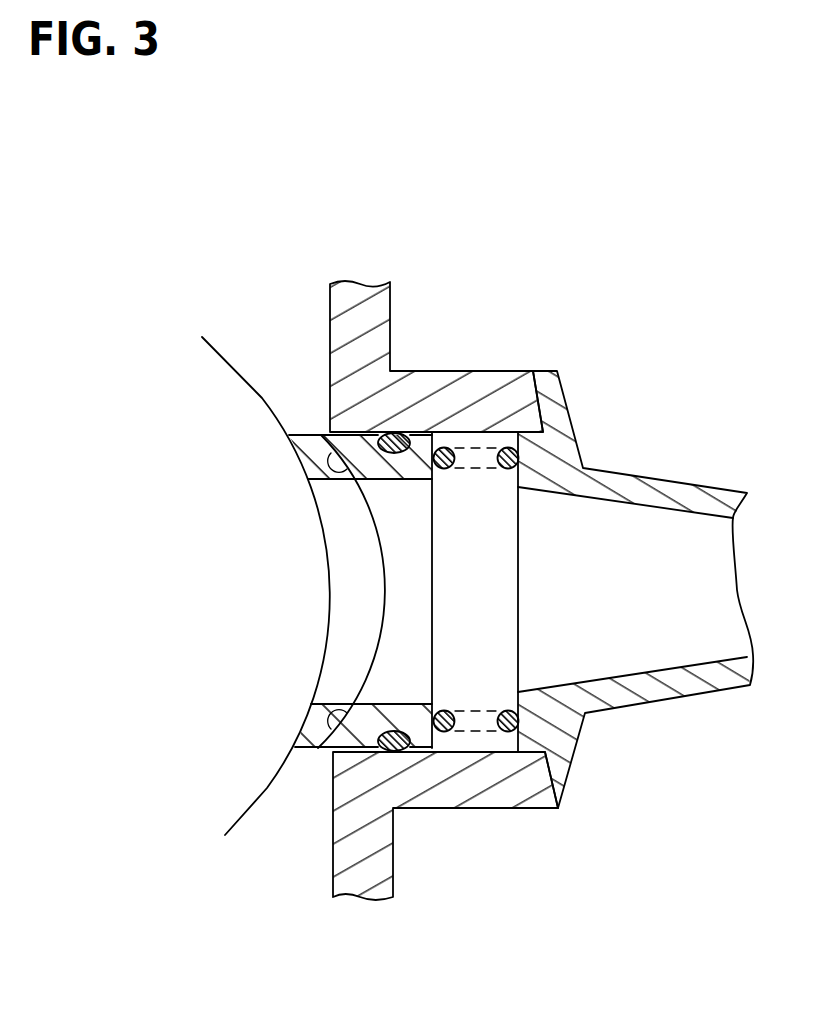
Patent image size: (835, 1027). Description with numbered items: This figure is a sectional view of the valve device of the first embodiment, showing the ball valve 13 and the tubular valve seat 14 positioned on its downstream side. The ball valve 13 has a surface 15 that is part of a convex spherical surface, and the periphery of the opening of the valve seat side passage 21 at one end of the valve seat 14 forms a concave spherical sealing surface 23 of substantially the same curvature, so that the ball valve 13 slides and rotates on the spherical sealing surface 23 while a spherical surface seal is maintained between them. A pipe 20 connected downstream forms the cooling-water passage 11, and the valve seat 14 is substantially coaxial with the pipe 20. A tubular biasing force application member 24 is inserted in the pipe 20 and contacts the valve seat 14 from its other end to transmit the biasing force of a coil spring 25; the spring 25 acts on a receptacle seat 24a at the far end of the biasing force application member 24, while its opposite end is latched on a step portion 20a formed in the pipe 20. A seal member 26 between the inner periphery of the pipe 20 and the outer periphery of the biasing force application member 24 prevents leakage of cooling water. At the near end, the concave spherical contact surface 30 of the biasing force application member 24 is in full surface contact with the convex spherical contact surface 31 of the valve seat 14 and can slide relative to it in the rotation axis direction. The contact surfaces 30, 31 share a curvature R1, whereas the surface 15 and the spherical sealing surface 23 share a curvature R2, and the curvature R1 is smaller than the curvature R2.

The cooling-water passage 11 is at (632, 537).
The ball valve 13 is at (220, 370).
The valve seat 14 is at (312, 735).
The surface 15 is at (316, 435).
The pipe 20 is at (520, 796).
The step portion 20a is at (510, 747).
The valve seat side passage 21 is at (355, 640).
The spherical sealing surface 23 is at (225, 835).
The biasing force application member 24 is at (362, 733).
The receptacle seat 24a is at (458, 453).
The spring 25 is at (444, 732).
The seal member 26 is at (394, 752).
The contact surface 30 is at (316, 472).
The contact surface 31 is at (341, 747).
The curvature R1 is at (375, 598).
The curvature R2 is at (320, 598).